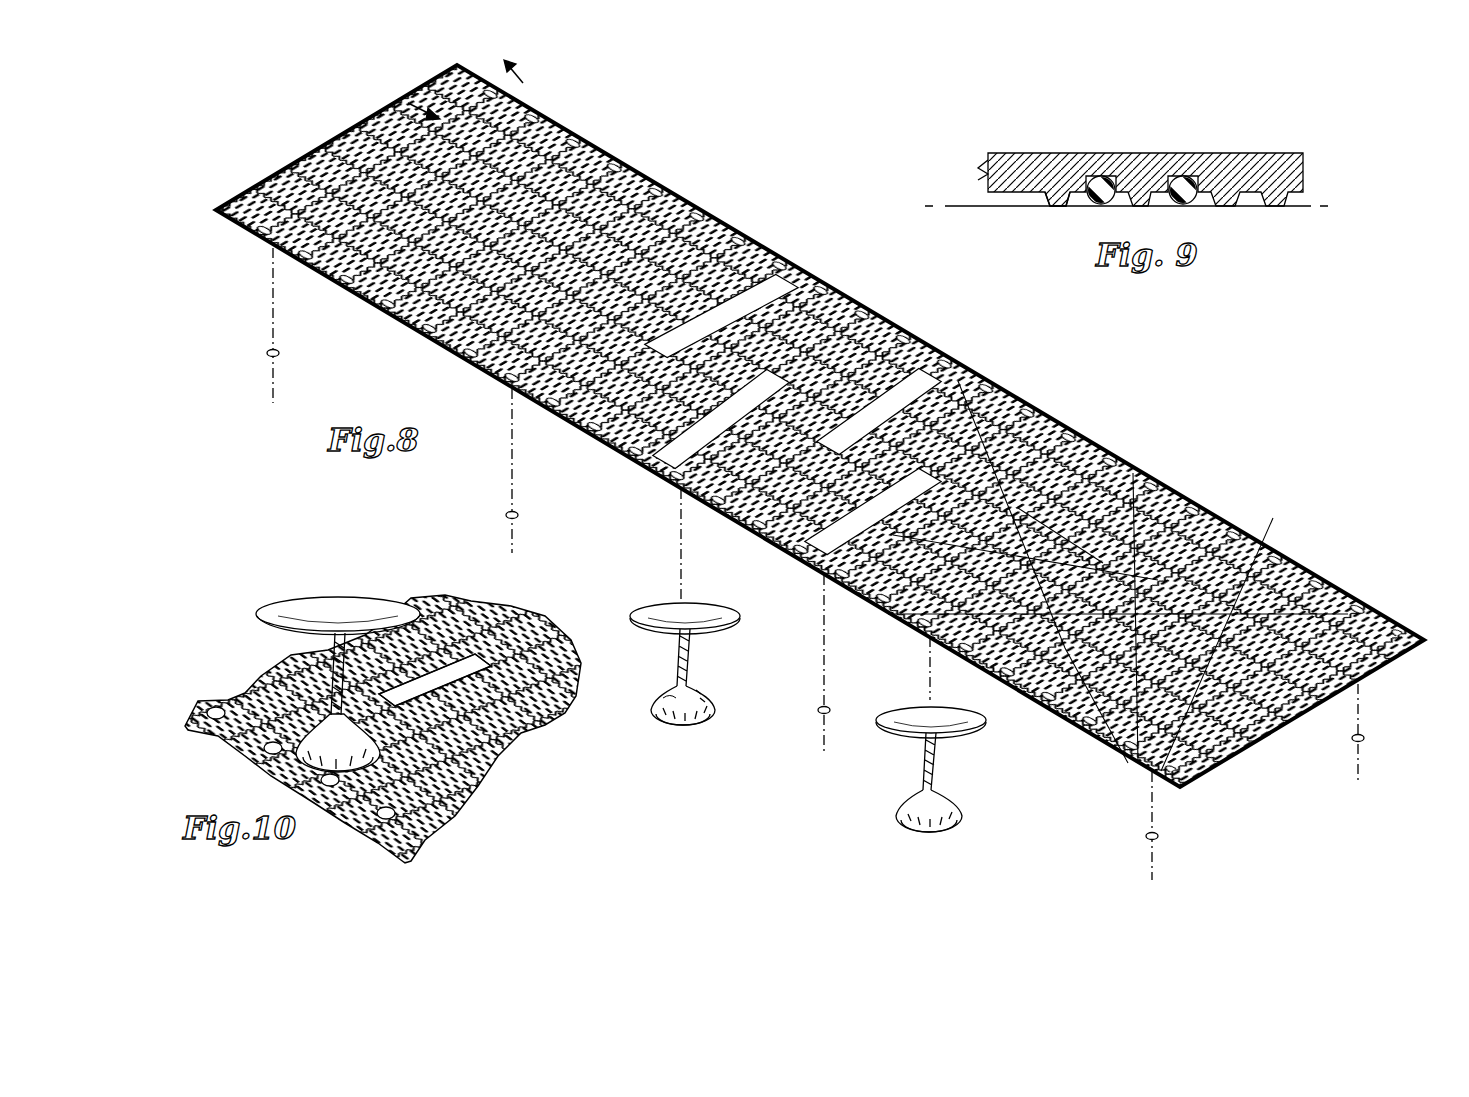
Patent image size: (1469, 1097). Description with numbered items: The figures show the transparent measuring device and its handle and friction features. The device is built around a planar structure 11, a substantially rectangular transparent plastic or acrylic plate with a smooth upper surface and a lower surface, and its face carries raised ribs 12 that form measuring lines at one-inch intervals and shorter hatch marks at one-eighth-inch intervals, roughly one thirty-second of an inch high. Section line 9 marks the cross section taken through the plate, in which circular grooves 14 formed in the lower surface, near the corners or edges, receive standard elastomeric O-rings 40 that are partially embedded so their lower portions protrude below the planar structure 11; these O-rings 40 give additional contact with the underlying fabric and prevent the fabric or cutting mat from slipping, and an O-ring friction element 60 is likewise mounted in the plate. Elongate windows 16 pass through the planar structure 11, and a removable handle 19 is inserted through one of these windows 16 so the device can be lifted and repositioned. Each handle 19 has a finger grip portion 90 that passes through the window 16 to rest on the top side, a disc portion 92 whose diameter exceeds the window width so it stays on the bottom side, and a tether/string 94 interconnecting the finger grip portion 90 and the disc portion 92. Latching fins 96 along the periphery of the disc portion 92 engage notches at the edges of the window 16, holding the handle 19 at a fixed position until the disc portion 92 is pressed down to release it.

In FIG. 8, the section line 9- 9 is at (456, 79).
In FIG. 9, the planar structure 11 is at (998, 160).
In FIG. 9, the raised ribs 12 is at (1050, 198).
In FIG. 8, the circular grooves 14 is at (1157, 482).
In FIG. 9, the circular grooves 14 is at (1173, 168).
In FIG. 8, the windows 16 is at (932, 366).
In FIG. 8, the removable handle 19 is at (811, 713).
In FIG. 8, the O-rings 40 is at (1373, 752).
In FIG. 9, the anchor 60 is at (1098, 168).
In FIG. 8, the finger grip portion 90 is at (703, 598).
In FIG. 8, the disc portion 92 is at (652, 713).
In FIG. 8, the tether/string 94 is at (683, 647).
In FIG. 8, the latching fins 96 is at (655, 682).